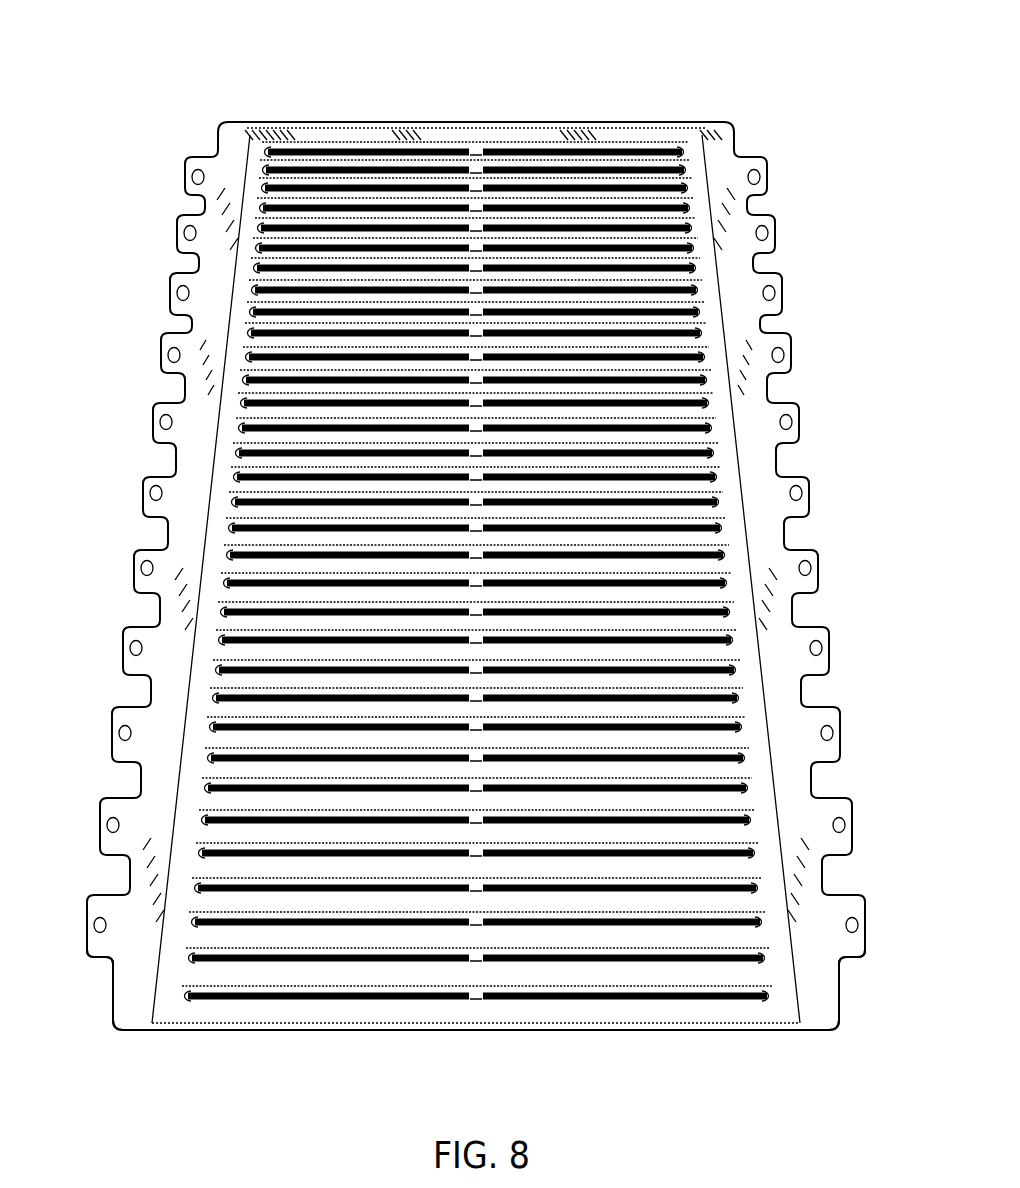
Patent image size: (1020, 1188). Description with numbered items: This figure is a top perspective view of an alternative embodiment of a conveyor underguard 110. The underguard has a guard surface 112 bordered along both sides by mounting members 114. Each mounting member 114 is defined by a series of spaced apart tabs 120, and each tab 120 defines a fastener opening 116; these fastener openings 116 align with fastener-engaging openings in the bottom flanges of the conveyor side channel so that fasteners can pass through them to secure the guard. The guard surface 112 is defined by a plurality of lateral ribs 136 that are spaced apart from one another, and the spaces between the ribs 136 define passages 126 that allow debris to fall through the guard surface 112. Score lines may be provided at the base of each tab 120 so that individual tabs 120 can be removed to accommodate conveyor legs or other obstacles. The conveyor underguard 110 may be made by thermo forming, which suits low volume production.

The conveyor underguard 110 is at (658, 78).
The guard surface 112 is at (598, 1028).
The mounting members 114 is at (103, 971).
The fastener openings 116 is at (150, 487).
The tabs 120 is at (163, 418).
The passages 126 is at (235, 788).
The lateral ribs 136 is at (383, 942).